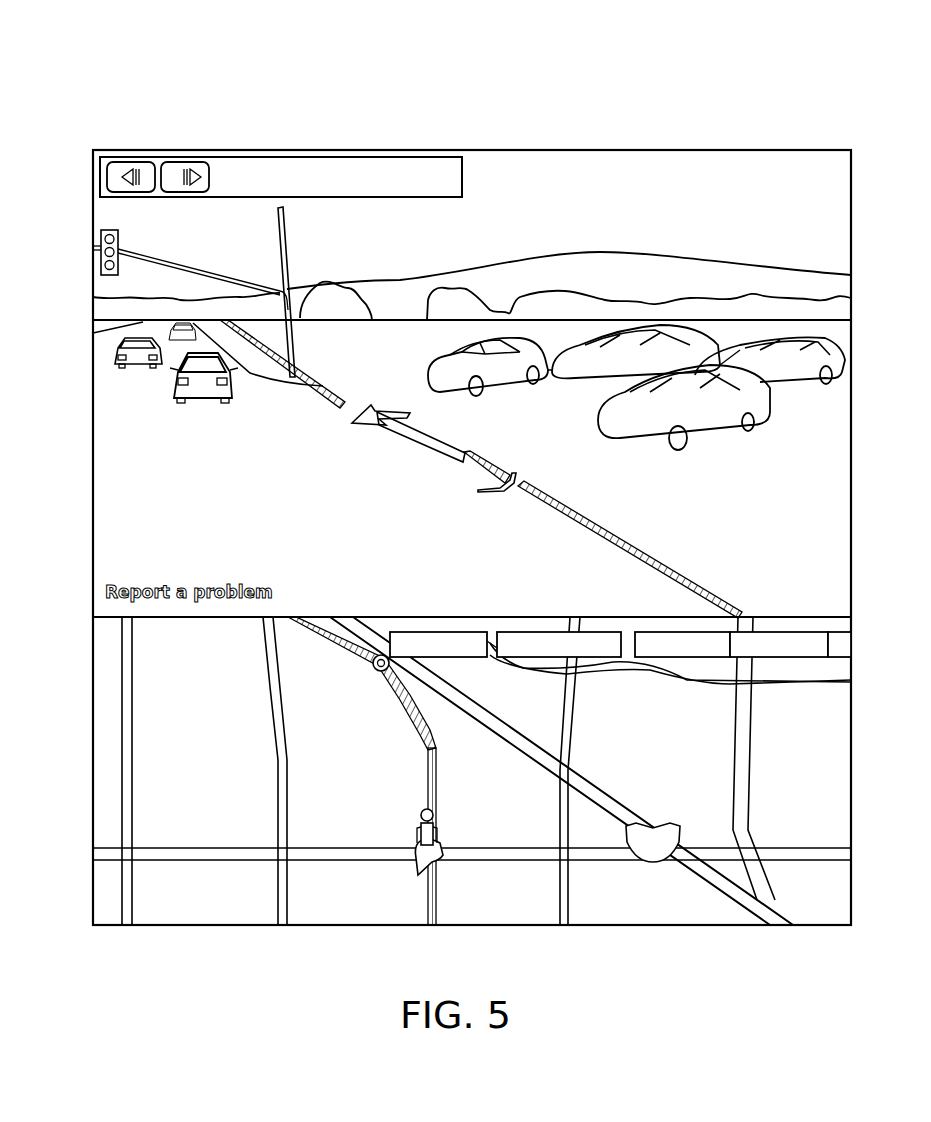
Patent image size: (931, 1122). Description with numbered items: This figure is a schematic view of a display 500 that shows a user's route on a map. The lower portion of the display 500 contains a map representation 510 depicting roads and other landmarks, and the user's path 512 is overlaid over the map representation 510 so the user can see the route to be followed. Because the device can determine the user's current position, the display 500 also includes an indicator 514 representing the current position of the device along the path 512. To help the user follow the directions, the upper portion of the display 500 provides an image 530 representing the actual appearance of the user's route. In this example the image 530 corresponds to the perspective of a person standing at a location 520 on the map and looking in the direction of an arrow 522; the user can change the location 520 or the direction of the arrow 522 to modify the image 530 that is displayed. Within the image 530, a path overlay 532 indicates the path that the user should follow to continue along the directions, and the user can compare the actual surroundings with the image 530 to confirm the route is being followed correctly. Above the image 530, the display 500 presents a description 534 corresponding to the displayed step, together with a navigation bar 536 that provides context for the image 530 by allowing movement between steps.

The display 500 is at (586, 133).
The map representation 510 is at (103, 810).
The user's path 512 is at (400, 697).
The indicator 514 is at (380, 672).
The location 520 is at (440, 828).
The arrow 522 is at (437, 883).
The image 530 is at (833, 362).
The path overlay 532 is at (647, 563).
The description 534 is at (349, 164).
The navigation bar 536 is at (143, 172).